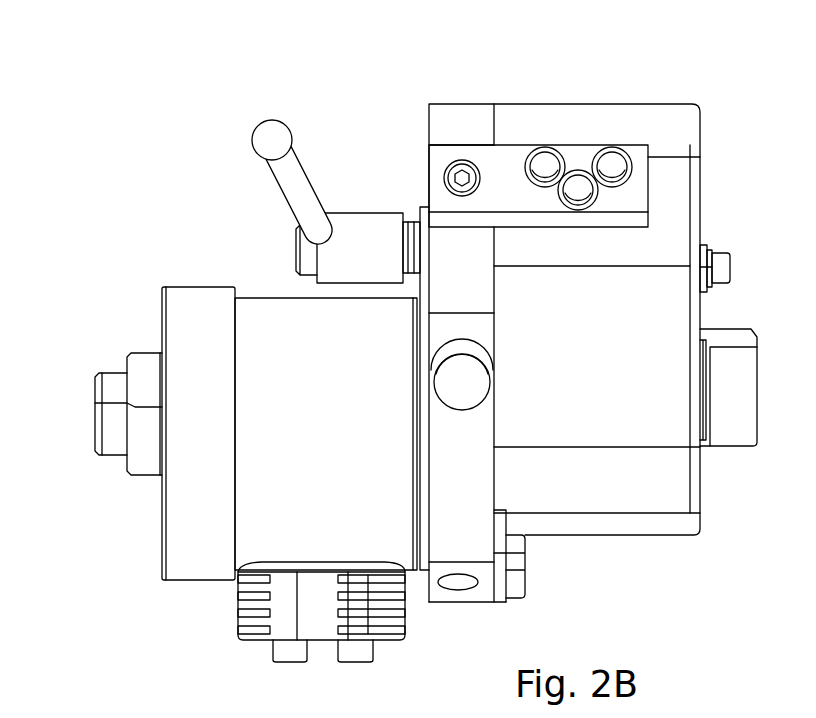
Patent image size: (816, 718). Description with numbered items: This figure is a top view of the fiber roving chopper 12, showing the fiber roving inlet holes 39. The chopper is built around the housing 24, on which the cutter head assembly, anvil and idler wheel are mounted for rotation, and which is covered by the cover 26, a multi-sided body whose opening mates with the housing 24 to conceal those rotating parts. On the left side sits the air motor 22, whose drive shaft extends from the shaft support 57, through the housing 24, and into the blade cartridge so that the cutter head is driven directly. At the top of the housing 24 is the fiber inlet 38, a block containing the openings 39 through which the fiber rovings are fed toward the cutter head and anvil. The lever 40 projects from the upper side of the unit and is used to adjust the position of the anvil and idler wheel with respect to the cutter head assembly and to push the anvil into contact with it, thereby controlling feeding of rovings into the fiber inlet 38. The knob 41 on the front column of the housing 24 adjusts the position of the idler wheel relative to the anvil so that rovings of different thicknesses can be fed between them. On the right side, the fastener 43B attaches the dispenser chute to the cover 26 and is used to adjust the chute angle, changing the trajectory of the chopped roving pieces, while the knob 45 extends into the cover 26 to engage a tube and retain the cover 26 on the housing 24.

The fiber roving chopper 12 is at (215, 215).
The air motor 22 is at (183, 557).
The housing 24 is at (472, 125).
The cover 26 is at (668, 128).
The fiber inlet 38 is at (507, 172).
The fiber roving inlet holes 39 is at (575, 170).
The lever 40 is at (305, 190).
The knob 41 is at (460, 404).
The fastener 43B is at (735, 268).
The knob 45 is at (737, 410).
The shaft support 57 is at (103, 432).